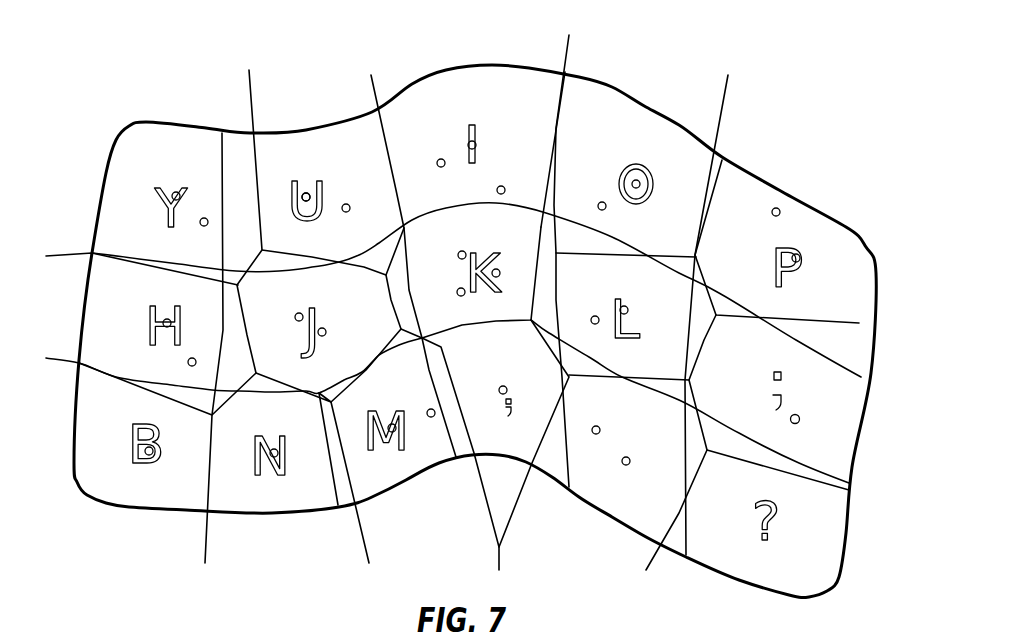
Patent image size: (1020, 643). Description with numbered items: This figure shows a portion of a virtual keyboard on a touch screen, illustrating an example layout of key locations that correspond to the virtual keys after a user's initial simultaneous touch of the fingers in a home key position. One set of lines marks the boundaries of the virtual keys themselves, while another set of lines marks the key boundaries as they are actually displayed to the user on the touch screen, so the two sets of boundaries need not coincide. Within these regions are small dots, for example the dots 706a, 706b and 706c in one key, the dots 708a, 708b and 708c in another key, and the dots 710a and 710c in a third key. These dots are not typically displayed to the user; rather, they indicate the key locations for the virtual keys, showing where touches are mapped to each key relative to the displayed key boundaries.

The dot 706a is at (462, 251).
The dot 706b is at (515, 255).
The dot 706c is at (458, 291).
The dot 708a is at (442, 159).
The dot 708b is at (477, 145).
The dot 708c is at (505, 186).
The dot 710a is at (307, 193).
The touch hit location for U key 710c is at (347, 204).